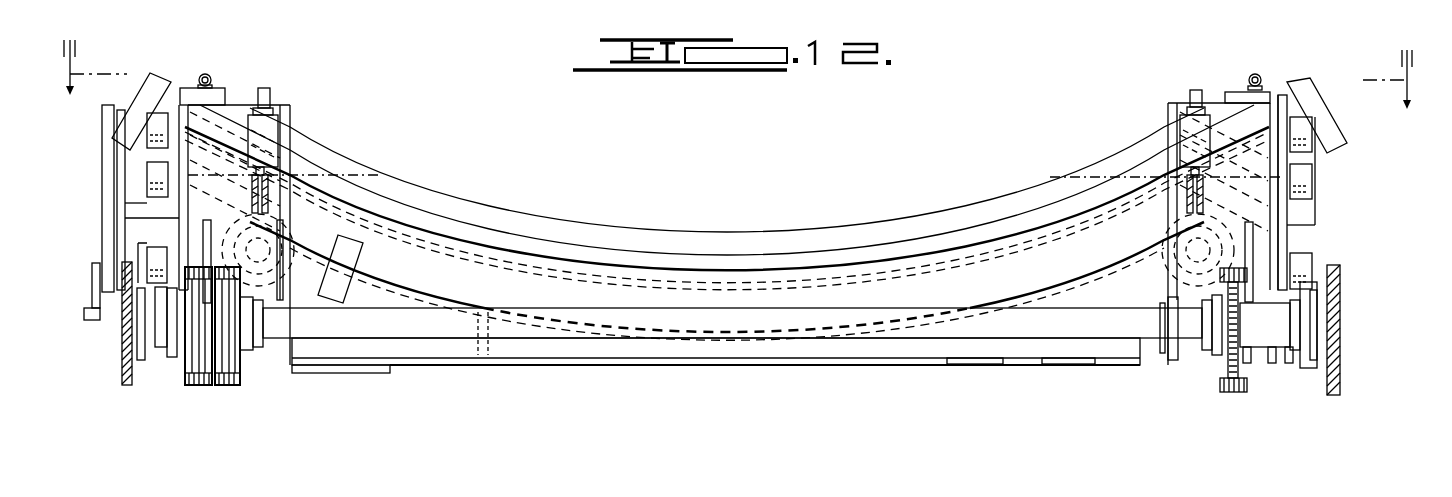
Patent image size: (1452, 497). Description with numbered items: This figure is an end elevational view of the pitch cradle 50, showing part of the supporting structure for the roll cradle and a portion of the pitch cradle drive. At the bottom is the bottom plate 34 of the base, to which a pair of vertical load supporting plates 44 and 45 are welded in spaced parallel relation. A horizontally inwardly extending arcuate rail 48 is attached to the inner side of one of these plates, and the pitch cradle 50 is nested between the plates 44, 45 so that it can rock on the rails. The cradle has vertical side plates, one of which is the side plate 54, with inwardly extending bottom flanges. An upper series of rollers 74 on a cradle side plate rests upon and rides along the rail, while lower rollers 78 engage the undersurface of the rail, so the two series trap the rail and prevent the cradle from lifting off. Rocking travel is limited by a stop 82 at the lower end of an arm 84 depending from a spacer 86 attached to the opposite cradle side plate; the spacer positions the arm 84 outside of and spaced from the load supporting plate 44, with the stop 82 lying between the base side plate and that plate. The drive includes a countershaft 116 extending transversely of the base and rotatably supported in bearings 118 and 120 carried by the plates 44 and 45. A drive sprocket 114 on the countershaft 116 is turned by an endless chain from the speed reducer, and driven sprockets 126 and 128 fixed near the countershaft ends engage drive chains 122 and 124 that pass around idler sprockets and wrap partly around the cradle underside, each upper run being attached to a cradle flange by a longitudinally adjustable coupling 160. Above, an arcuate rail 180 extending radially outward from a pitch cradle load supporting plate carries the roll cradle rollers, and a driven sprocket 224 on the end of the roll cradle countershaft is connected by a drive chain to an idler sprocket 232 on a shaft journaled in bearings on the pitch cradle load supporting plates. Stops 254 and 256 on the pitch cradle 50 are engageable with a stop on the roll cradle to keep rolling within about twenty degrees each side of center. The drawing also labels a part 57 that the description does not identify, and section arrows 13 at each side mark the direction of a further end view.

The section line 13- 13 is at (731, 86).
The bottom plate 34 is at (840, 364).
The load supporting plate 44 is at (125, 386).
The load supporting plate 45 is at (1337, 364).
The rail 48 is at (147, 157).
The pitch cradle 50 is at (574, 206).
The side plate 54 is at (1278, 240).
The support rail 57 is at (182, 88).
The rollers 74 is at (1313, 131).
The rollers 78 is at (1313, 254).
The stop 82 is at (91, 321).
The arm 84 is at (102, 226).
The spacer 86 is at (150, 262).
The drive sprocket 114 is at (210, 385).
The countershaft 116 is at (422, 335).
The bearing 118 is at (153, 373).
The bearing 120 is at (1309, 358).
The drive chain 122 is at (292, 178).
The drive chain 124 is at (1136, 220).
The driven sprocket 126 is at (240, 372).
The driven sprocket 128 is at (1223, 364).
The longitudinally adjustable coupling 160 is at (290, 127).
The arcuate rail 180 is at (443, 222).
The driven sprocket 224 is at (1123, 290).
The idler sprocket 232 is at (305, 303).
The stop 254 is at (148, 75).
The stop 256 is at (1298, 80).